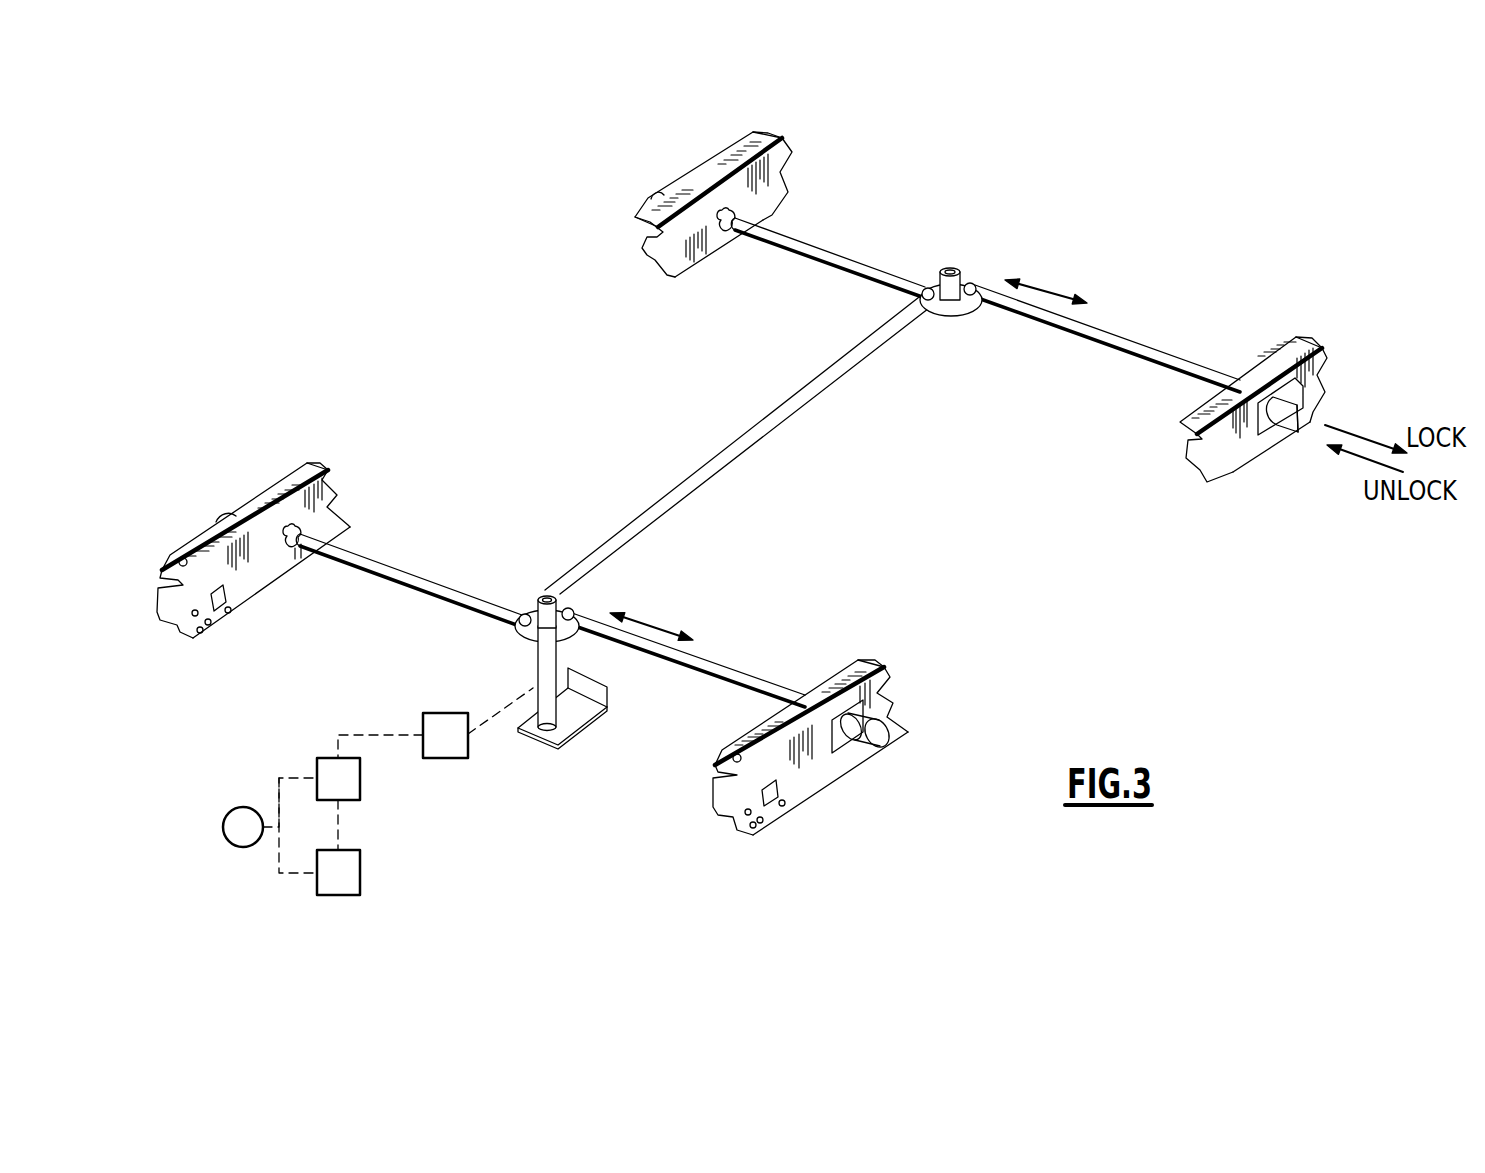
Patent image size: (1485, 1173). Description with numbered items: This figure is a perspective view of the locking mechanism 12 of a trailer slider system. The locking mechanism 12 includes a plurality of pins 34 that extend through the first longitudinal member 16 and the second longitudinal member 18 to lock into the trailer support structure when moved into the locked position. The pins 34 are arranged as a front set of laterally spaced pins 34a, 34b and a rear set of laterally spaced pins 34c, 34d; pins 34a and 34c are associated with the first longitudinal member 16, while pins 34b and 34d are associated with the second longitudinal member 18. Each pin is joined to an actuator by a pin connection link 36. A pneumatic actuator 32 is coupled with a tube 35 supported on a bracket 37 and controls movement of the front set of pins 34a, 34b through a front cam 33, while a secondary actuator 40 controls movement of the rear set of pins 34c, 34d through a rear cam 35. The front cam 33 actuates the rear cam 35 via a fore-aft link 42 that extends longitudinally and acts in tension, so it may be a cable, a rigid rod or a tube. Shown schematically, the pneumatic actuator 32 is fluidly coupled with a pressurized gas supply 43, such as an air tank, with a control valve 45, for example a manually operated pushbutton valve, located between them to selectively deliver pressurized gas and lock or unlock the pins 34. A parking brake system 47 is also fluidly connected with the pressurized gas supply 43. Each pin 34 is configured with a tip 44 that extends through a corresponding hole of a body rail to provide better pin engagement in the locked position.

The locking mechanism 12 is at (492, 412).
The first longitudinal member 16 is at (471, 383).
The second longitudinal member 18 is at (1043, 597).
The pneumatic actuator 32 is at (450, 758).
The front cam 33 is at (566, 606).
The pins 34 is at (660, 192).
The front pin 34a is at (220, 518).
The front pin 34b is at (850, 733).
The rear pin 34c is at (655, 196).
The rear pin 34d is at (1328, 365).
The rear cam 35 is at (960, 283).
The pin connection link 36 is at (828, 255).
The bracket 37 is at (603, 692).
The secondary actuator 40 is at (978, 352).
The fore-aft link 42 is at (688, 480).
The pressurized gas supply 43 is at (225, 817).
The tip 44 is at (893, 718).
The control valve 45 is at (363, 783).
The parking brake system 47 is at (363, 876).